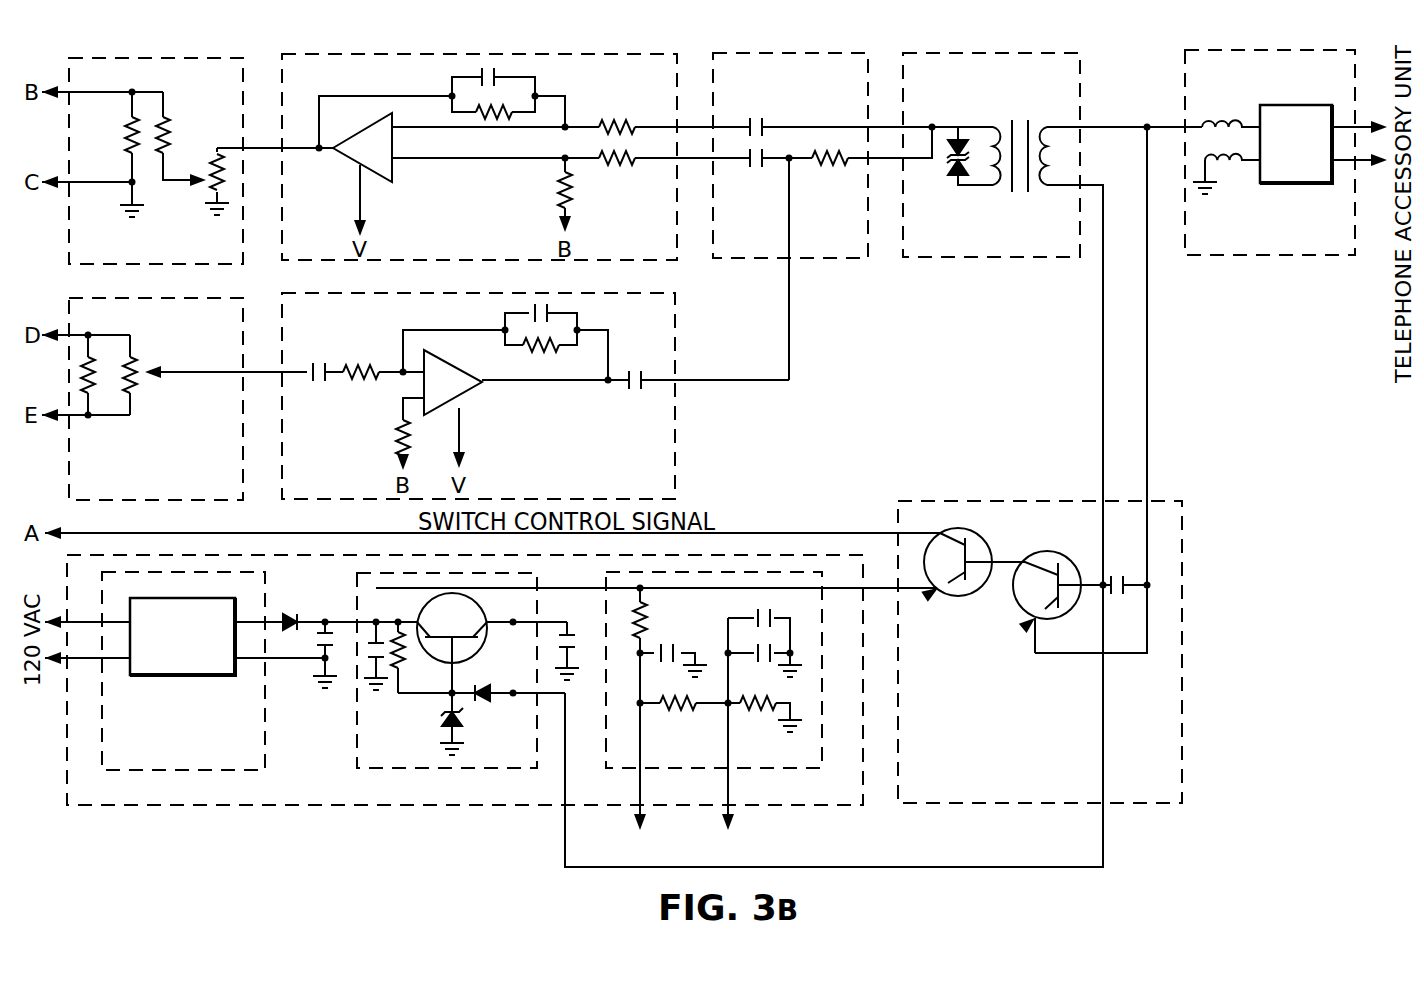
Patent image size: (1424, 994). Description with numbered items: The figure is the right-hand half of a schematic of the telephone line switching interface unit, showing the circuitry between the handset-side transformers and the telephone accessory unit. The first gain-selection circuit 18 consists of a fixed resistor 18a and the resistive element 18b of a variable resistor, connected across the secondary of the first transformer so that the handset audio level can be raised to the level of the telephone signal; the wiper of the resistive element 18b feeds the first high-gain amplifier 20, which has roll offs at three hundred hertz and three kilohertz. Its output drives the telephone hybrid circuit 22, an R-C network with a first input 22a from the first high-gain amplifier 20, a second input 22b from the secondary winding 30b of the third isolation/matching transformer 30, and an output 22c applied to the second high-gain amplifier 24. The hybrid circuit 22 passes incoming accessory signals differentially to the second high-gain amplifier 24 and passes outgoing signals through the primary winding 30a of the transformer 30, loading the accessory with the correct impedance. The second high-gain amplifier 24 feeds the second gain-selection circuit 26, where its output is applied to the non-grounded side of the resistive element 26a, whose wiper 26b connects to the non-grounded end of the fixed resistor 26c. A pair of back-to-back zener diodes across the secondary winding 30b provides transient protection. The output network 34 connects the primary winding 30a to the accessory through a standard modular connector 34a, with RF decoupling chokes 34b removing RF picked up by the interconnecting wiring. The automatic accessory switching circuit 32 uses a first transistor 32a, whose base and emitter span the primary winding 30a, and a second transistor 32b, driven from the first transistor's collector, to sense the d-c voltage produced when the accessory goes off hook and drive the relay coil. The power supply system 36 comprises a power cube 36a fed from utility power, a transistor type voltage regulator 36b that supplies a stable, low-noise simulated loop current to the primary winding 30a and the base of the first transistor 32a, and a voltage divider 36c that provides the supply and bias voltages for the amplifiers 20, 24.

The first gain-selection circuit 18 is at (156, 399).
The resistor 18a is at (97, 385).
The resistive element of a variable resistor 18b is at (138, 362).
The first high-gain amplifier 20 is at (535, 396).
The telephone hybrid circuit 22 is at (824, 158).
The first input 22a is at (782, 167).
The second input 22b is at (882, 165).
The output 22c is at (695, 165).
The second high-gain amplifier 24 is at (516, 158).
The second gain-selection circuit 26 is at (201, 161).
The resistive element 26a is at (216, 142).
The resistive element wiper 26b is at (165, 187).
The fixed resistor 26c is at (117, 137).
The third isolation/matching transformer 30 is at (883, 460).
The primary winding 30a is at (1060, 130).
The secondary winding 30b is at (985, 177).
The automatic accessory switching circuit 32 is at (1040, 653).
The first transistor 32a is at (1027, 628).
The second transistor 32b is at (948, 600).
The output network 34 is at (1286, 153).
The standard modular connector 34a is at (1296, 144).
The RF decoupling chokes 34b is at (1223, 115).
The power supply system 36 is at (502, 682).
The power cube 36a is at (259, 671).
The transistor type voltage regulator 36b is at (468, 670).
The voltage divider 36c is at (714, 701).